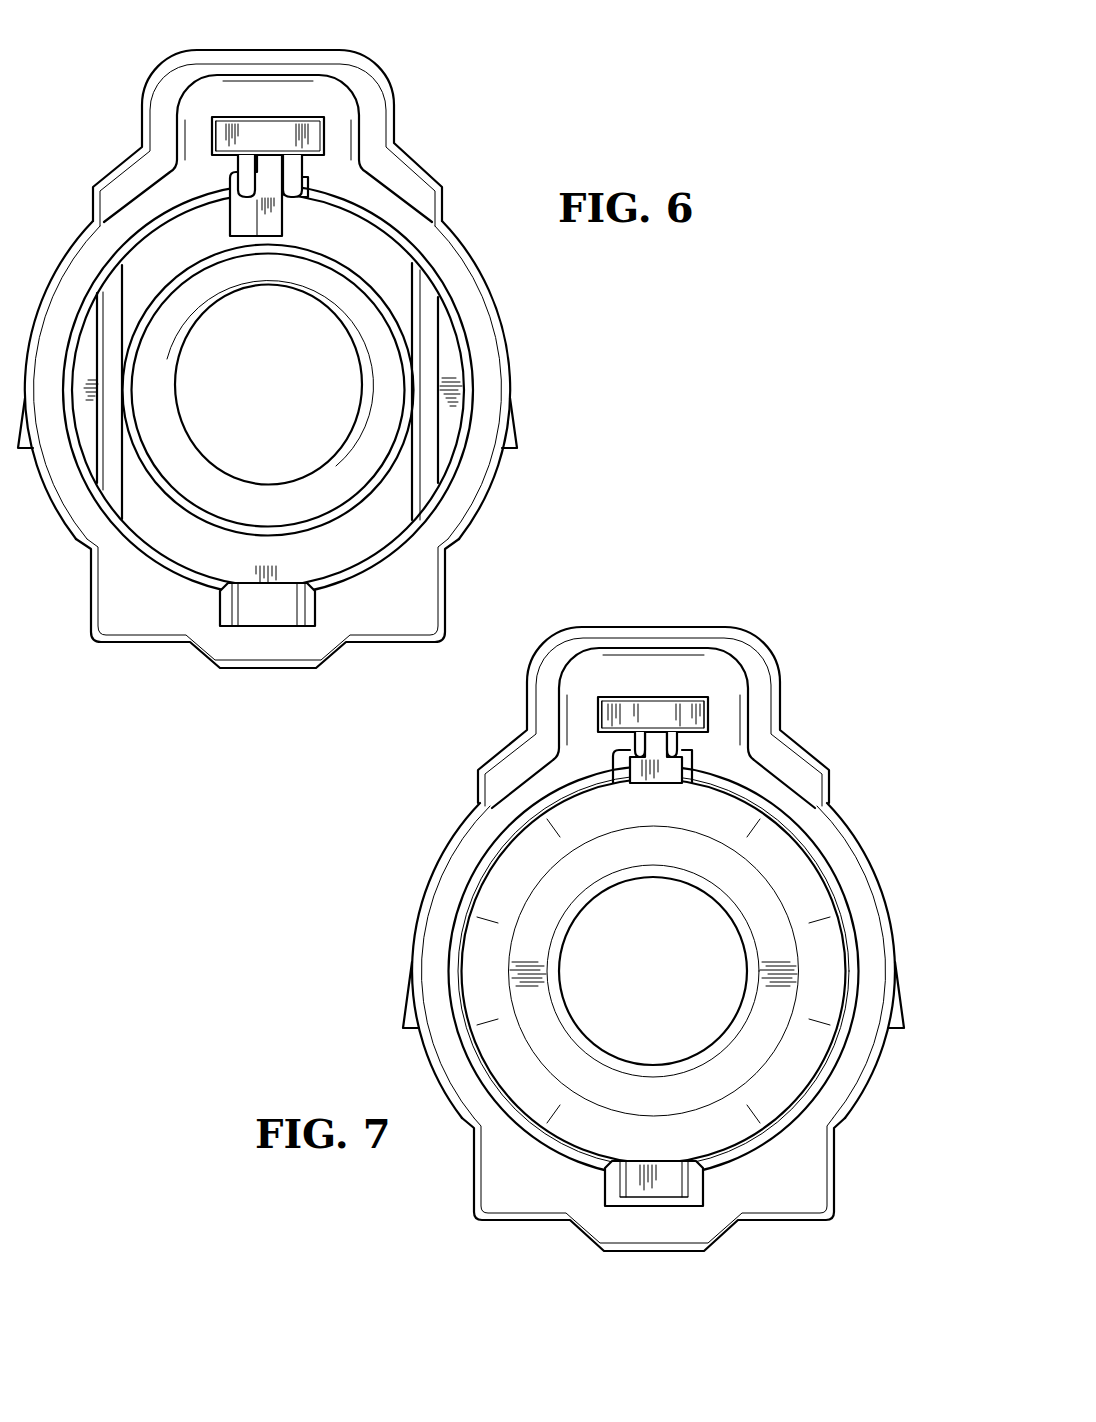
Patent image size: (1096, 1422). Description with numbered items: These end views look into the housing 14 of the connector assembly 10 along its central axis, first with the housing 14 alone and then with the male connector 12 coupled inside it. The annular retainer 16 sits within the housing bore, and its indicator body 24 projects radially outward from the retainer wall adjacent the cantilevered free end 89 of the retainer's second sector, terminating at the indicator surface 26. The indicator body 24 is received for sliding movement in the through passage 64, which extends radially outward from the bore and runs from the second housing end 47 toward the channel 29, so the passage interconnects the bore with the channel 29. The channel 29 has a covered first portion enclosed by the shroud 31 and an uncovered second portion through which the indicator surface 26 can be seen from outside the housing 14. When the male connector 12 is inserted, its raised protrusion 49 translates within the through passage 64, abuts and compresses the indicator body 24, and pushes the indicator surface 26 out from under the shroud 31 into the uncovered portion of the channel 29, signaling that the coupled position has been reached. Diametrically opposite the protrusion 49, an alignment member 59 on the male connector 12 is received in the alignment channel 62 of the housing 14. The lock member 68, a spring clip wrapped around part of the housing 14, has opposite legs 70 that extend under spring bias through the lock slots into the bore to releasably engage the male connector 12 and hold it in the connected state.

In FIG. 7, the connector assembly 10 is at (876, 1214).
In FIG. 7, the male connector 12 is at (848, 1046).
In FIG. 6, the housing 14 is at (504, 490).
In FIG. 7, the housing 14 is at (848, 798).
In FIG. 6, the retainer 16 is at (360, 284).
In FIG. 7, the retainer 16 is at (653, 971).
In FIG. 6, the indicator body 24 is at (276, 180).
In FIG. 7, the indicator body 24 is at (664, 744).
In FIG. 6, the indicator surface 26 is at (257, 108).
In FIG. 7, the indicator surface 26 is at (654, 686).
In FIG. 6, the channel 29 is at (203, 130).
In FIG. 7, the channel 29 is at (590, 709).
In FIG. 6, the shroud 31 is at (300, 79).
In FIG. 7, the shroud 31 is at (683, 655).
In FIG. 6, the second housing end 47 is at (88, 272).
In FIG. 7, the second housing end 47 is at (882, 912).
In FIG. 7, the protrusion 49 is at (630, 757).
In FIG. 7, the alignment member 59 is at (646, 1192).
In FIG. 6, the alignment channel 62 is at (278, 615).
In FIG. 7, the alignment channel 62 is at (616, 1204).
In FIG. 6, the through passage 64 is at (266, 168).
In FIG. 7, the through passage 64 is at (647, 740).
In FIG. 6, the lock member 68 is at (395, 121).
In FIG. 7, the lock member 68 is at (773, 668).
In FIG. 6, the legs 70 is at (430, 331).
In FIG. 6, the cantilevered free end 89 is at (250, 230).